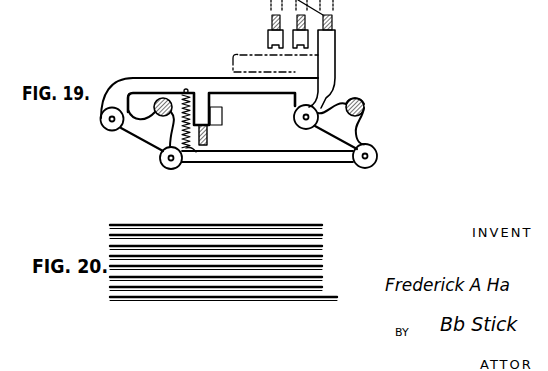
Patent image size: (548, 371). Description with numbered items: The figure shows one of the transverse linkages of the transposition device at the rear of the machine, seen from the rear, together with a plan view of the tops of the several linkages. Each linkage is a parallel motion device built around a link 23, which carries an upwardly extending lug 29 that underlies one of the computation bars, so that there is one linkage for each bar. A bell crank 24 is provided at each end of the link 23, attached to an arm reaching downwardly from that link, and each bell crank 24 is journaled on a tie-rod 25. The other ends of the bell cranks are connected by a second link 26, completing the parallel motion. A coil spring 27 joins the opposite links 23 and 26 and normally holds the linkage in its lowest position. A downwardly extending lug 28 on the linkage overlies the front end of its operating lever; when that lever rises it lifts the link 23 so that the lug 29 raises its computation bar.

In FIG. 19, the link 23 is at (200, 77).
In FIG. 20, the link 23 is at (157, 282).
In FIG. 19, the bell crank 24 is at (143, 132).
In FIG. 19, the tie-rod 25 is at (163, 97).
In FIG. 19, the second link 26 is at (283, 163).
In FIG. 19, the coil spring 27 is at (197, 153).
In FIG. 19, the downwardly extending lug 28 is at (211, 107).
In FIG. 19, the upwardly extending lug 29 is at (336, 33).
In FIG. 20, the upwardly extending lug 29 is at (281, 278).